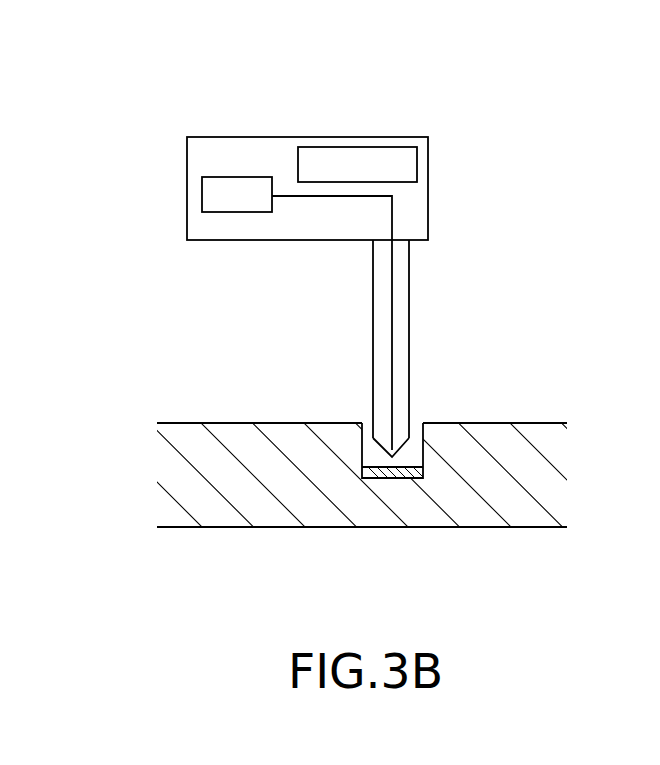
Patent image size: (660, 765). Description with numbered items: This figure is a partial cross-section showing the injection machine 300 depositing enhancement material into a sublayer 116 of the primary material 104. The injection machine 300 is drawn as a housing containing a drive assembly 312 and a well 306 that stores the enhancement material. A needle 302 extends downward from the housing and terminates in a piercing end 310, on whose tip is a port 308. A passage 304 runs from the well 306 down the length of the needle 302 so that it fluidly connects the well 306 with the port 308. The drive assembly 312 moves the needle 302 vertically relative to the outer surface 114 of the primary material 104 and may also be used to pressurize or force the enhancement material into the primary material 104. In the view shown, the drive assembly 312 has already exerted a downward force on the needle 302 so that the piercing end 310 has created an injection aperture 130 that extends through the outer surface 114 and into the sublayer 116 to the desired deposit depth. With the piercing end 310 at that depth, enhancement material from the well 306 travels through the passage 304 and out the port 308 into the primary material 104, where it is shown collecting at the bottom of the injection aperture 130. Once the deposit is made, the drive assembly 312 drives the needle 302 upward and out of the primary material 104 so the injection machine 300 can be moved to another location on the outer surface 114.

The injection machine 300 is at (365, 137).
The drive assembly 312 is at (417, 160).
The well 306 is at (222, 212).
The passage 304 is at (392, 280).
The needle 302 is at (409, 308).
The piercing end 310 is at (373, 363).
The injection aperture 130 is at (373, 432).
The port 308 is at (410, 442).
The outer surface 114 is at (527, 423).
The primary material 104 is at (476, 527).
The sublayer 116 is at (116, 472).